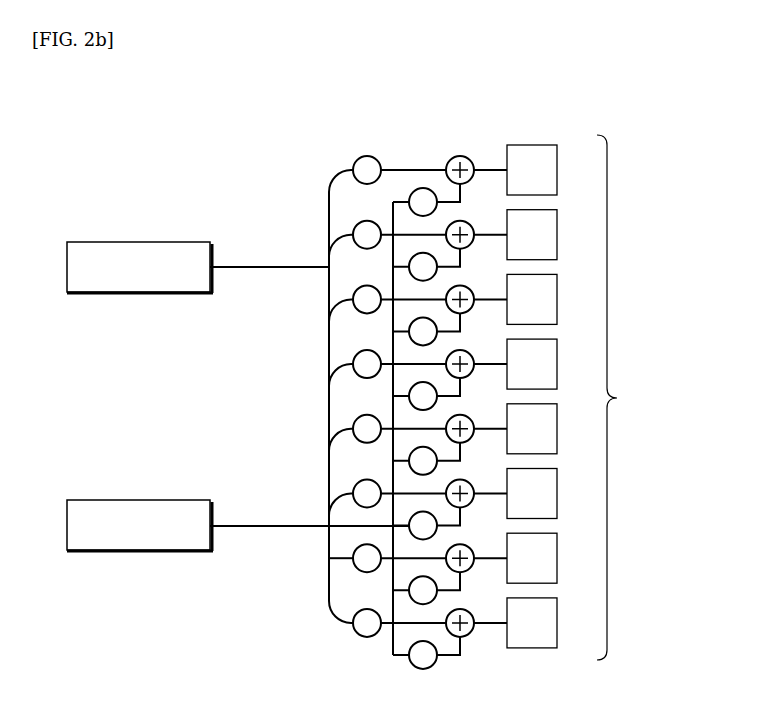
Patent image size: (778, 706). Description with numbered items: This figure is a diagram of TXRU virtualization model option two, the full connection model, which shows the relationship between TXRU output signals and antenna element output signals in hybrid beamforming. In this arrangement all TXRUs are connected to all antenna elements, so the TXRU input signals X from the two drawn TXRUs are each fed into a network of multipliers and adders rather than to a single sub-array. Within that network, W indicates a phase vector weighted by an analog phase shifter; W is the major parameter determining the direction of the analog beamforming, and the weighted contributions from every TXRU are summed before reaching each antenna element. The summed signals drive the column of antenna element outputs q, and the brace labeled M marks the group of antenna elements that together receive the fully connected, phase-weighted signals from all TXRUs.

The phase vector W is at (418, 373).
The TXRU input signals X is at (238, 394).
The antenna elements / output ports q is at (550, 396).
The number of antenna elements M is at (618, 397).